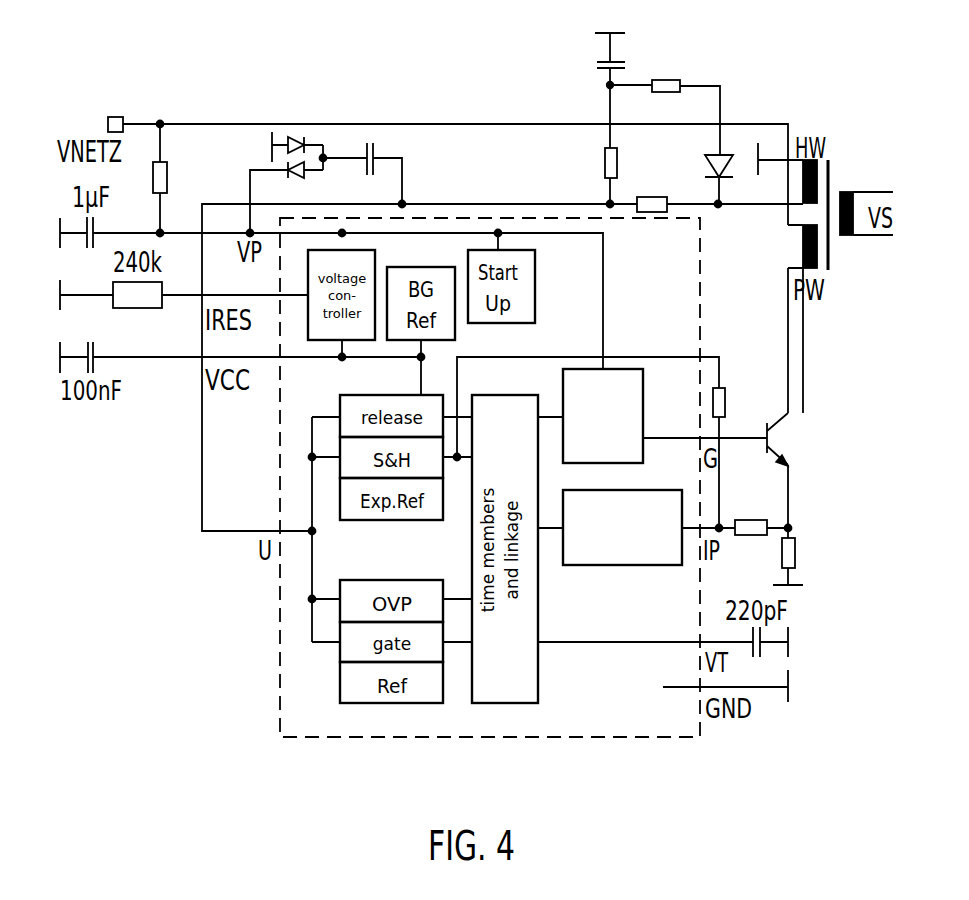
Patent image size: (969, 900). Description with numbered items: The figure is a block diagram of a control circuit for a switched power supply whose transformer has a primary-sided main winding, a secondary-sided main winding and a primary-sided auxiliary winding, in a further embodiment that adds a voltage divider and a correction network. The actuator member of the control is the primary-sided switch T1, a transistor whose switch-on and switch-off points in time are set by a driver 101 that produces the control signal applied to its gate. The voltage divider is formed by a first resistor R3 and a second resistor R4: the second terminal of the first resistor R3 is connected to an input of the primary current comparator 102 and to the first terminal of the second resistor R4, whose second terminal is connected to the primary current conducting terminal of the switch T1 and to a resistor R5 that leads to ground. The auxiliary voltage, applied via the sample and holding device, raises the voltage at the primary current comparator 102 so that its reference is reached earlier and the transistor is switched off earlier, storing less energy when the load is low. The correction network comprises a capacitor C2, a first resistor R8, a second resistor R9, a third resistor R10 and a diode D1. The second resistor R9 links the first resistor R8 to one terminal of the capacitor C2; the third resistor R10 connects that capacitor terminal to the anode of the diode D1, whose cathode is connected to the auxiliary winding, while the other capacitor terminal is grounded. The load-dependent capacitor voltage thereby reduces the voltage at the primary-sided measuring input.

The driver 101 is at (648, 383).
The primary current comparator 102 is at (590, 567).
The capacitor C2 is at (596, 61).
The third resistor R10 is at (665, 100).
The second resistor R9 is at (595, 144).
The first resistor R8 is at (652, 189).
The diode D1 is at (705, 176).
The first resistor R3 is at (734, 404).
The primary-sided switch T1 is at (793, 470).
The second resistor R4 is at (751, 515).
The resistor R5 is at (800, 556).